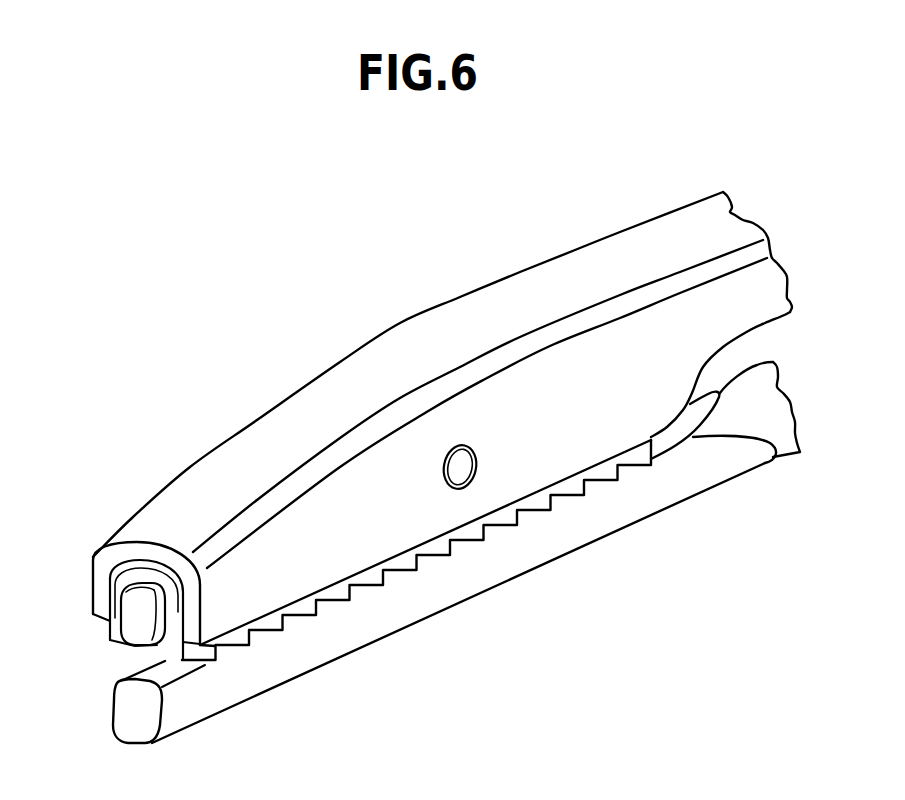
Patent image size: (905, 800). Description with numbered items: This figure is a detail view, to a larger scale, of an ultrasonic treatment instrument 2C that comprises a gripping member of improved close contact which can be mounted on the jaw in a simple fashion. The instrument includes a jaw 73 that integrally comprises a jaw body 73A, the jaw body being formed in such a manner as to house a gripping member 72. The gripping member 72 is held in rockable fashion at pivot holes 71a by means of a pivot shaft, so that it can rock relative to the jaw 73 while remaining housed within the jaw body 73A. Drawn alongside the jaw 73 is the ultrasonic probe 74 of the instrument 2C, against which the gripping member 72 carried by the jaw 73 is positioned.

The ultrasonic treatment instrument 2C is at (555, 216).
The jaw 73 is at (290, 333).
The jaw body 73A is at (367, 355).
The pivot holes 71a is at (461, 458).
The gripping member 72 is at (132, 612).
The ultrasonic probe 74 is at (477, 580).